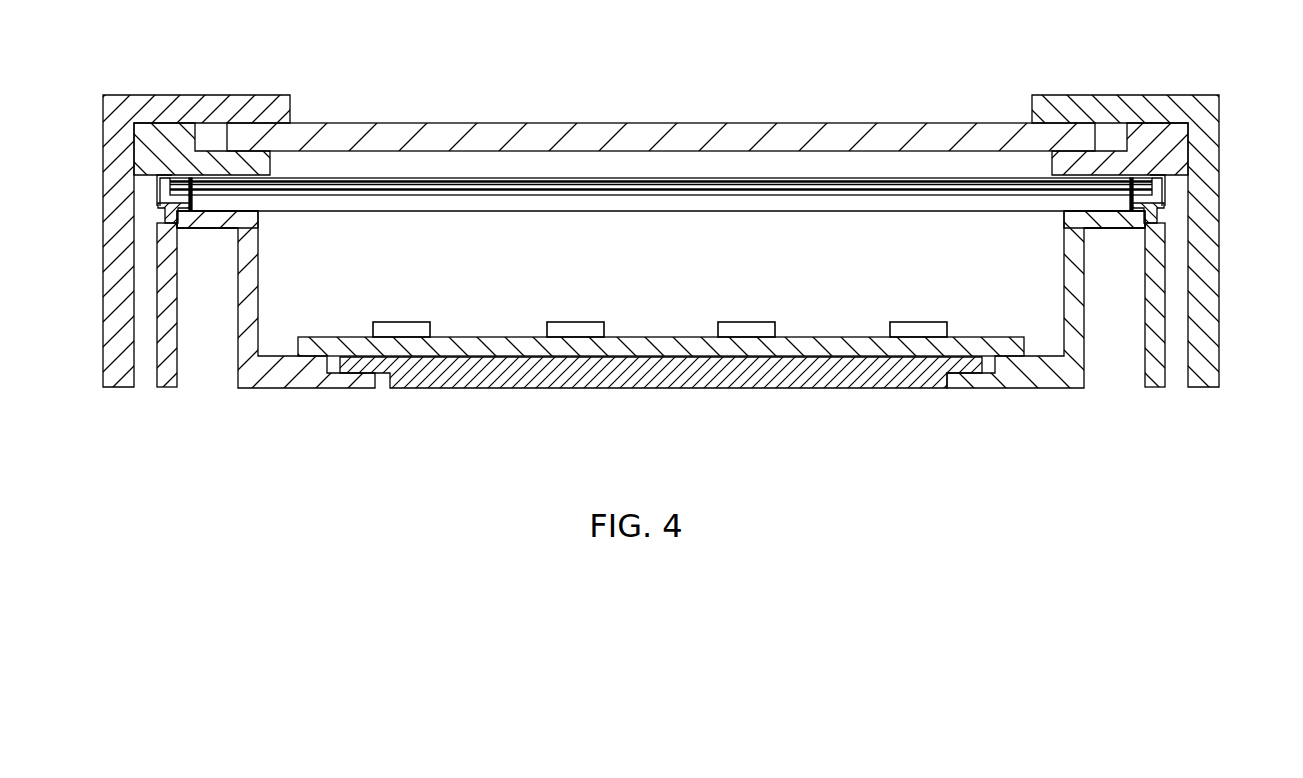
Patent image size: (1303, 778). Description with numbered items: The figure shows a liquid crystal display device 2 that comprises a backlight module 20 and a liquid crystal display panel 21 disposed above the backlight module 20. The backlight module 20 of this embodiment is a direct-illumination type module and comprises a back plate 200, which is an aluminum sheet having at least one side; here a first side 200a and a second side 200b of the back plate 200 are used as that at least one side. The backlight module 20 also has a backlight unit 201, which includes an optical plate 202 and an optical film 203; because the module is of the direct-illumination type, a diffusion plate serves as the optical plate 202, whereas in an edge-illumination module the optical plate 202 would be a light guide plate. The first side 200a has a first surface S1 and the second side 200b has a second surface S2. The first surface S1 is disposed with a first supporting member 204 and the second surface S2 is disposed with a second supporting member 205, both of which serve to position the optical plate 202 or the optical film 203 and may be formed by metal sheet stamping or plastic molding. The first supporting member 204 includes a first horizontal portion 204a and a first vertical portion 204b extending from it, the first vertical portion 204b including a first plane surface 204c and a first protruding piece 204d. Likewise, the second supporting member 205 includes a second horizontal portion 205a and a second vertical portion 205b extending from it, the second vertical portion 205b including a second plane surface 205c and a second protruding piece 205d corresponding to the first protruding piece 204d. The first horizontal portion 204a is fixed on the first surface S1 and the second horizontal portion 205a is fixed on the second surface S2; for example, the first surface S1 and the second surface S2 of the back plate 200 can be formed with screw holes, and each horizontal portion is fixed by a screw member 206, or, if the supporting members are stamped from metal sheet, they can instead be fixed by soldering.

The liquid crystal display device 2 is at (1160, 471).
The backlight module 20 is at (229, 347).
The liquid crystal display panel 21 is at (828, 130).
The back plate 200 is at (645, 389).
The first side 200a is at (264, 218).
The second side 200b is at (1042, 218).
The backlight unit 201 is at (686, 338).
The optical plate 202 is at (660, 212).
The optical film 203 is at (594, 179).
The first supporting member 204 is at (186, 206).
The first horizontal portion 204a is at (174, 230).
The first vertical portion 204b is at (189, 185).
The first plane surface 204c is at (199, 218).
The first protruding piece 204d is at (182, 168).
The second supporting member 205 is at (1136, 206).
The second horizontal portion 205a is at (1148, 230).
The second vertical portion 205b is at (1133, 188).
The second plane surface 205c is at (1123, 218).
The clamping block 205d is at (1140, 168).
The screw member 206 is at (166, 212).
The first surface S1 is at (206, 214).
The second surface S2 is at (1118, 214).